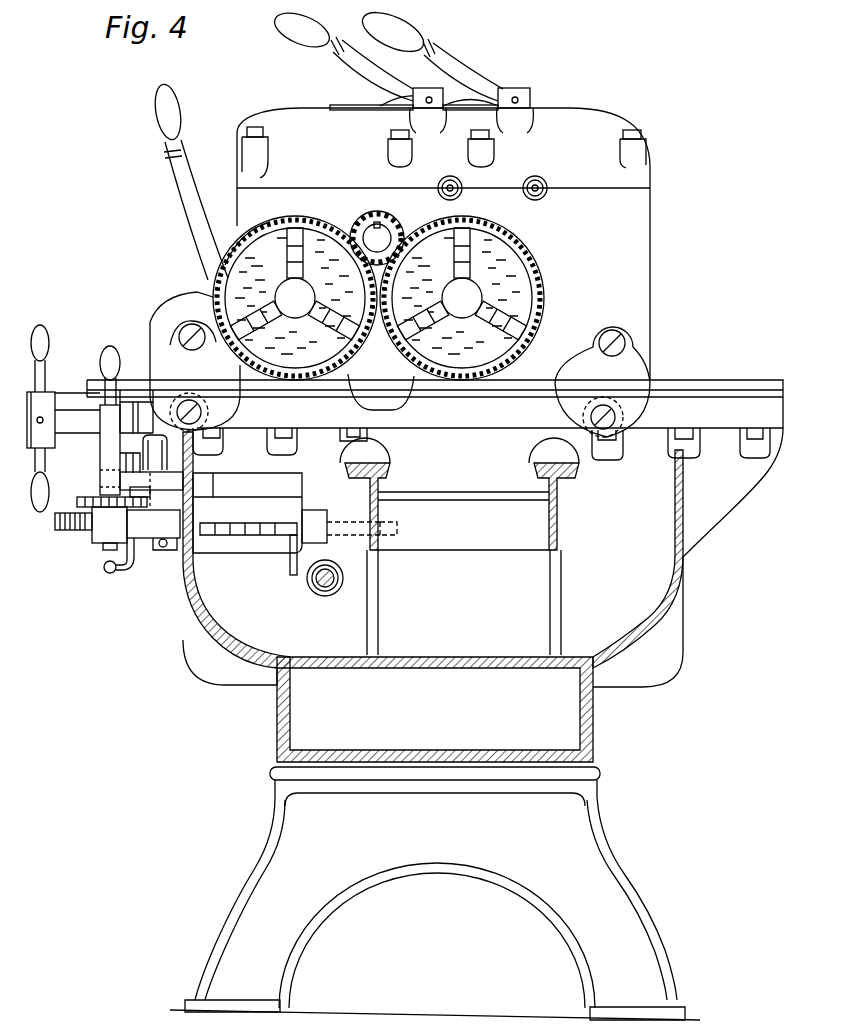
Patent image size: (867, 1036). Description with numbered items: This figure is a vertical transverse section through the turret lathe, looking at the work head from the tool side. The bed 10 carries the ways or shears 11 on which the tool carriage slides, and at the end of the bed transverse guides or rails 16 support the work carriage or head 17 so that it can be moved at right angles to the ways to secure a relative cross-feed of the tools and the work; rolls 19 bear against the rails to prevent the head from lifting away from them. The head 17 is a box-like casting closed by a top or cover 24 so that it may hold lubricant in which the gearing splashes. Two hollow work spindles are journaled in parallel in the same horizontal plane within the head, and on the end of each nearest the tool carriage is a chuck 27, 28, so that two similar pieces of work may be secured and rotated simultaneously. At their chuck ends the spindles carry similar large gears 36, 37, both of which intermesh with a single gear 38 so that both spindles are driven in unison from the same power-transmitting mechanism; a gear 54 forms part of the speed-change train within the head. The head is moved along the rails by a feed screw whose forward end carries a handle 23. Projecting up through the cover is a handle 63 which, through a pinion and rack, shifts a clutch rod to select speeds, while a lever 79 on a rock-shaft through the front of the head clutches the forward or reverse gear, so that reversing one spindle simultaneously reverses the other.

The bed 10 is at (218, 632).
The ways or shears 11 is at (378, 457).
The transverse guides or rails 16 is at (693, 383).
The work carriage or head 17 is at (628, 268).
The rolls 19 is at (177, 432).
The handle 23 is at (45, 385).
The top or cover 24 is at (592, 118).
The chuck or work holder 27 is at (295, 298).
The chuck or work holder 28 is at (462, 298).
The large gear 36 is at (312, 228).
The large gear 37 is at (476, 198).
The gear 38 is at (374, 209).
The gear 54 is at (356, 55).
The handle 63 is at (447, 57).
The handle or lever 79 is at (178, 155).